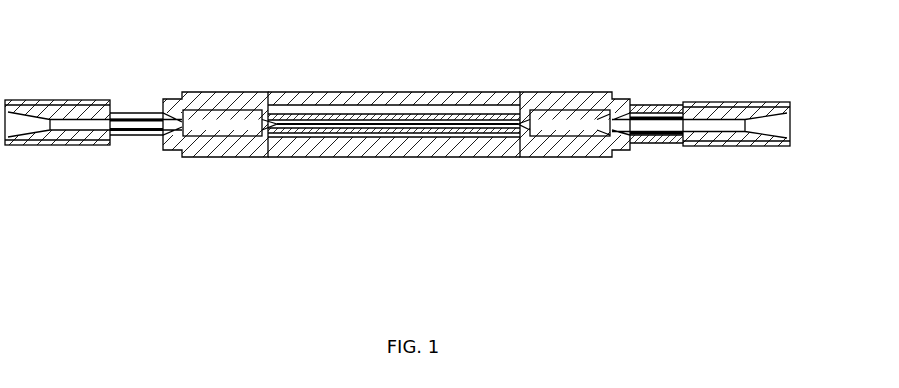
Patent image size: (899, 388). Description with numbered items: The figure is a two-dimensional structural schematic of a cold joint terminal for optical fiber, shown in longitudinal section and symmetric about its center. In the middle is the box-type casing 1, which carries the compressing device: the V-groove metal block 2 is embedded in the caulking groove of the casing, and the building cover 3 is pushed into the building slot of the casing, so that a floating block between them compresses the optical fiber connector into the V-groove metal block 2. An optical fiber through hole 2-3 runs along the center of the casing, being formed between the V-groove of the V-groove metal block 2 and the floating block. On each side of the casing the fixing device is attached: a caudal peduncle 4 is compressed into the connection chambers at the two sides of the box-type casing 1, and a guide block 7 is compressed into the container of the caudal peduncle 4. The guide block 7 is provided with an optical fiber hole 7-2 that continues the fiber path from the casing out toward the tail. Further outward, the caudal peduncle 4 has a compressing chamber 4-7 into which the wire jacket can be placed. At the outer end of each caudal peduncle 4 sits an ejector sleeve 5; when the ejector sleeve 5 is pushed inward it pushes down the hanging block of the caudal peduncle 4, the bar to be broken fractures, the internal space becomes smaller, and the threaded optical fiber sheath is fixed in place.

The box-type casing 1 is at (392, 92).
The V-groove metal block 2 is at (415, 128).
The building cover 3 is at (290, 157).
The caudal peduncle 4 is at (130, 113).
The ejector sleeve 5 is at (28, 100).
The guide block 7 is at (228, 110).
The optical fiber through hole 2-3 is at (443, 123).
The optical fiber hole 7-2 is at (222, 125).
The compressing chamber 4-7 is at (75, 128).